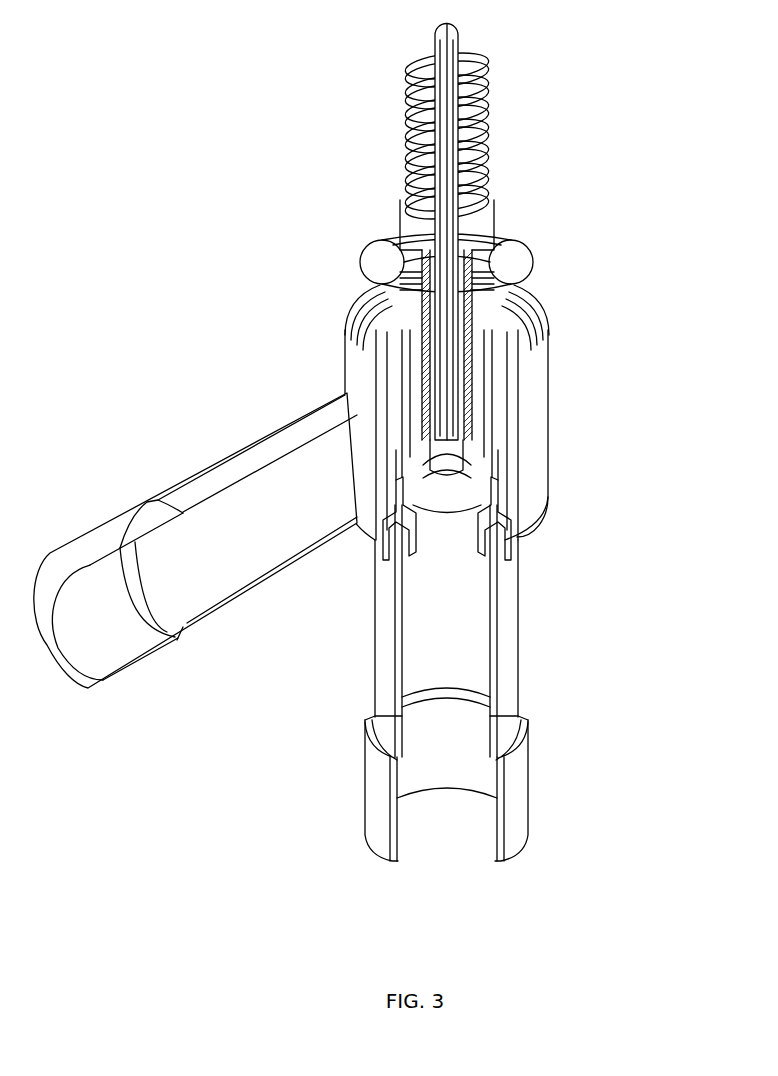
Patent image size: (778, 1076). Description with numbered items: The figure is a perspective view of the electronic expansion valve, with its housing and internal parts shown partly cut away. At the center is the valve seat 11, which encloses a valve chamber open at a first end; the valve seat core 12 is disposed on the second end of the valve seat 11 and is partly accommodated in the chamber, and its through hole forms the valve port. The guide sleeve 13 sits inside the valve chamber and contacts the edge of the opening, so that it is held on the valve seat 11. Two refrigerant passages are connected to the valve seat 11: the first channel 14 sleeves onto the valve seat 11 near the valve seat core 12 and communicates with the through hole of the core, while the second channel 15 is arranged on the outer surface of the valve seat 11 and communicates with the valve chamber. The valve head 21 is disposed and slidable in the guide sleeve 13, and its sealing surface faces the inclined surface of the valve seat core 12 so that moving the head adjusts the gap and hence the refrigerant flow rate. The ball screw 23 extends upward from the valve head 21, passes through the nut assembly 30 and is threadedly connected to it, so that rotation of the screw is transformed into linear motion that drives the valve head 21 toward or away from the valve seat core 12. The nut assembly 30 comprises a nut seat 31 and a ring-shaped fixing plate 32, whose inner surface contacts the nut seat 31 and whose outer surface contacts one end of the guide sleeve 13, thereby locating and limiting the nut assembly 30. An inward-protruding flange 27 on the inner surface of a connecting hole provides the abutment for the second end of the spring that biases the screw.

The valve seat 11 is at (547, 510).
The valve seat core 12 is at (420, 543).
The guide sleeve 13 is at (486, 424).
The first channel 14 is at (515, 810).
The second channel 15 is at (100, 525).
The valve head 21 is at (487, 478).
The ball screw 23 is at (458, 50).
The flange 27 is at (483, 403).
The nut assembly 30 is at (301, 170).
The nut seat 31 is at (395, 212).
The fixing plate 32 is at (375, 272).